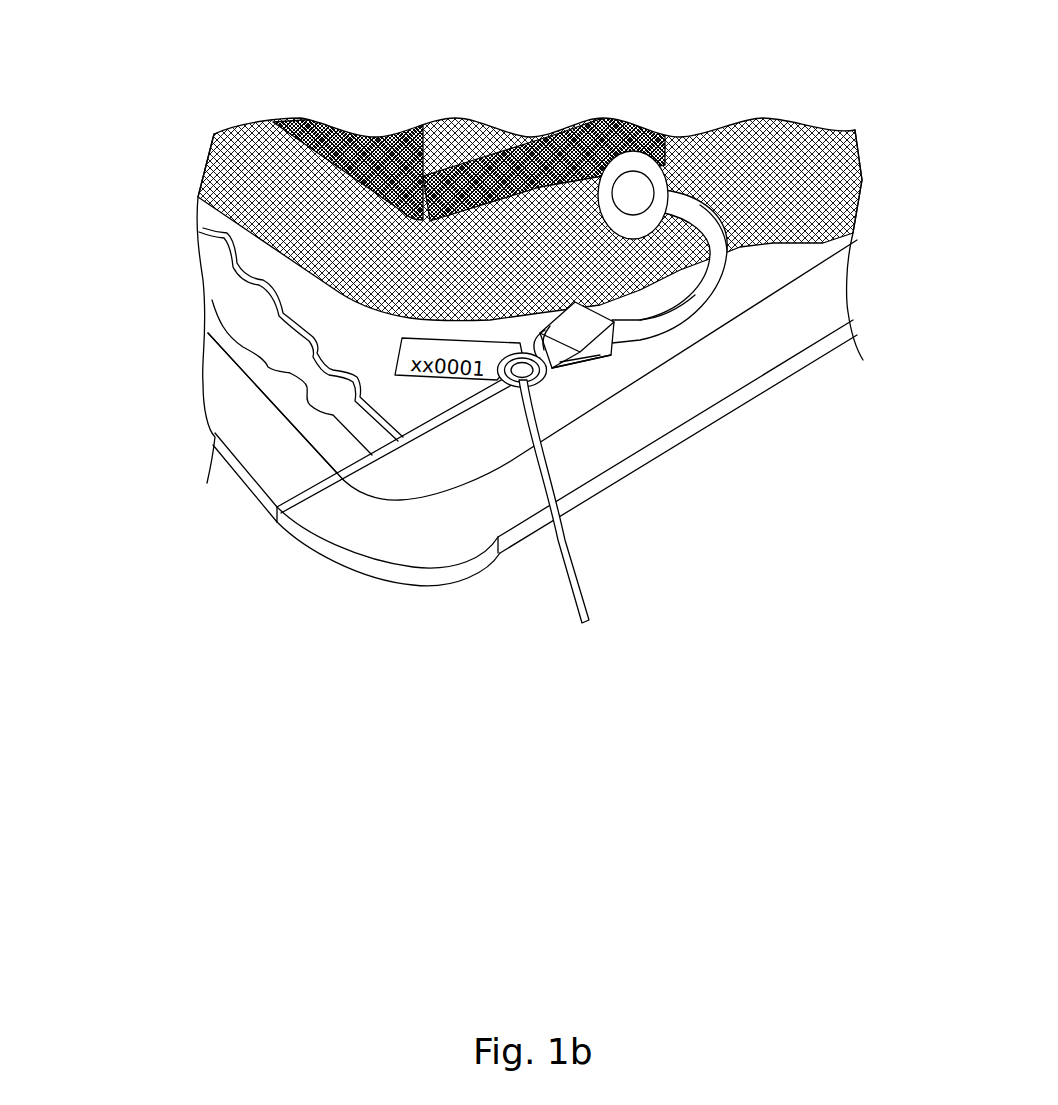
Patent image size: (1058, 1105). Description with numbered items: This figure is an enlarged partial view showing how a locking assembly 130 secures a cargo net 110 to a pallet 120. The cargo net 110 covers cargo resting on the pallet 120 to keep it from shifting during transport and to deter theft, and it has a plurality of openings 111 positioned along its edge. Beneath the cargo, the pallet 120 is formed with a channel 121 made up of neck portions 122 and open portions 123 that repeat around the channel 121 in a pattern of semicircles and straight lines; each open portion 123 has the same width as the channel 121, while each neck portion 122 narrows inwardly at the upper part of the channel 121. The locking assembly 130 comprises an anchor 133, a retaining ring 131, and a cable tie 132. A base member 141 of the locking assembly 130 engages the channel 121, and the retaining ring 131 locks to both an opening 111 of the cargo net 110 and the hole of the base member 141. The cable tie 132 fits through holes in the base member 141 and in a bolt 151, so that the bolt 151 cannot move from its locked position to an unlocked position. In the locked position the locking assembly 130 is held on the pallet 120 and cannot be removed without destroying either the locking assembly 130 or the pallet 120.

The cargo net 110 is at (395, 142).
The opening 111 is at (630, 170).
The pallet 120 is at (337, 535).
The channel 121 is at (232, 287).
The neck portion 122 is at (268, 327).
The open portion 123 is at (287, 347).
The locking assembly 130 is at (612, 388).
The retaining ring 131 is at (713, 257).
The cable tie 132 is at (567, 585).
The anchor 133 is at (650, 300).
The base member 141 is at (617, 330).
The bolt 151 is at (580, 350).